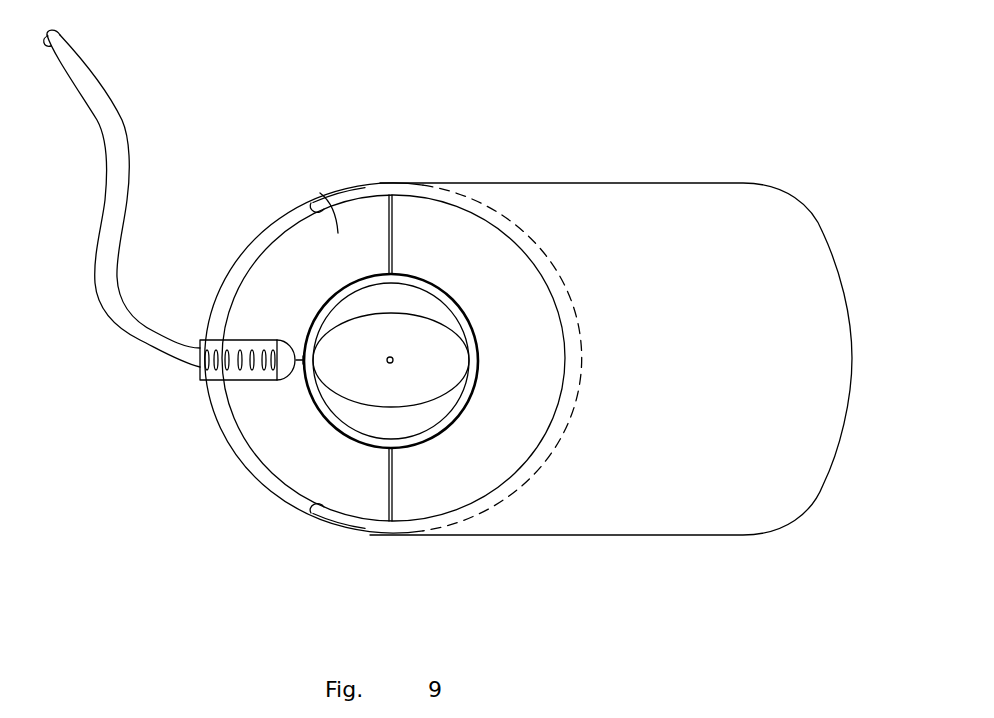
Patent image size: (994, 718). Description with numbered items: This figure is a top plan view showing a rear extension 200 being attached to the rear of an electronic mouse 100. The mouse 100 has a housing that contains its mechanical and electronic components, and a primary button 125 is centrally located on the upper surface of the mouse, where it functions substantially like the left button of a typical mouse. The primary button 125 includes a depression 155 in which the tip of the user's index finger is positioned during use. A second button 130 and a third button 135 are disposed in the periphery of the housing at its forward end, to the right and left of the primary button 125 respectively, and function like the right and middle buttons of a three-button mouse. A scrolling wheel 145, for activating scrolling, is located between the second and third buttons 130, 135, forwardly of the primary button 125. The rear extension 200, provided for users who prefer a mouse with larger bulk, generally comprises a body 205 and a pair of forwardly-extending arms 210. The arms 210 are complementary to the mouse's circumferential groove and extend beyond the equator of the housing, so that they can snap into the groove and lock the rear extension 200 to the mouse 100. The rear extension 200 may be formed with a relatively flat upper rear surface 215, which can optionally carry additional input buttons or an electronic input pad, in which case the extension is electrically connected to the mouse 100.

The electronic mouse 100 is at (334, 361).
The primary button 125 is at (313, 345).
The second button 130 is at (282, 457).
The third button 135 is at (320, 193).
The scrolling wheel 145 is at (222, 380).
The depression 155 is at (345, 372).
The rear extension 200 is at (611, 287).
The body 205 is at (713, 280).
The forwardly-extending arms 210 is at (366, 192).
The upper rear surface 215 is at (713, 371).